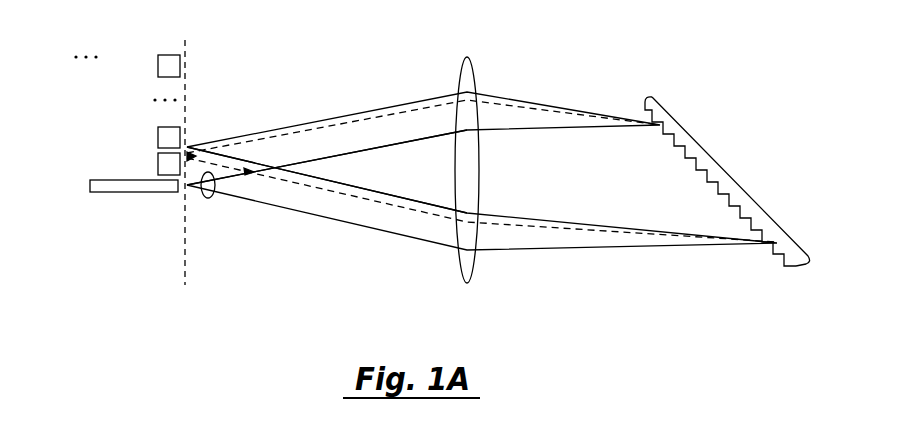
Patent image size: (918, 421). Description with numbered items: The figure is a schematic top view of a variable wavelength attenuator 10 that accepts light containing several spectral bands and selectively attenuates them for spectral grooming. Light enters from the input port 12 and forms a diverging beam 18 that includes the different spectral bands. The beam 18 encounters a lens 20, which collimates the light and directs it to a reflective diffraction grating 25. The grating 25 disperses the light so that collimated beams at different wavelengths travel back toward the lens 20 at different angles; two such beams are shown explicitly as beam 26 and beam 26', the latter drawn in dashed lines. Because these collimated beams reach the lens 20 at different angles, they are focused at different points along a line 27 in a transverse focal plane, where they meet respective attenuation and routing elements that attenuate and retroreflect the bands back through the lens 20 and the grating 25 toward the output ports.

The input port 12 is at (165, 193).
The line 27 is at (183, 252).
The diverging beam 18 is at (213, 197).
The variable wavelength attenuator 10 is at (213, 265).
The collimated beam 26 is at (482, 153).
The collimated beam 26' is at (482, 136).
The lens 20 is at (462, 270).
The reflective diffraction grating 25 is at (658, 98).